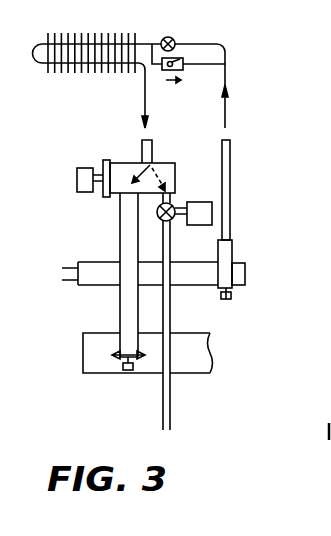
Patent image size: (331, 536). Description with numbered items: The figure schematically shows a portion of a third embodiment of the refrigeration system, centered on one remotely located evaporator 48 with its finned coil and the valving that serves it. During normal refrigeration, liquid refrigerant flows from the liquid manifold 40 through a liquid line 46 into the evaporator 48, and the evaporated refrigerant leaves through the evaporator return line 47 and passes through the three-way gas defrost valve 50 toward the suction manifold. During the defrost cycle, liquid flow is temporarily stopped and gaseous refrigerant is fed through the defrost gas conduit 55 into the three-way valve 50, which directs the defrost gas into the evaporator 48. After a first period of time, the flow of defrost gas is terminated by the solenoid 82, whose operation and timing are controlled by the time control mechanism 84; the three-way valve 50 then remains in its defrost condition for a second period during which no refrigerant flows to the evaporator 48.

The liquid manifold 40 is at (99, 262).
The liquid line 46 is at (224, 165).
The evaporator return line 47 is at (144, 98).
The evaporator 48 is at (78, 73).
The three-way gas defrost valve 50 is at (122, 163).
The defrost gas conduit 55 is at (170, 410).
The solenoid 82 is at (174, 203).
The time control mechanism 84 is at (203, 226).